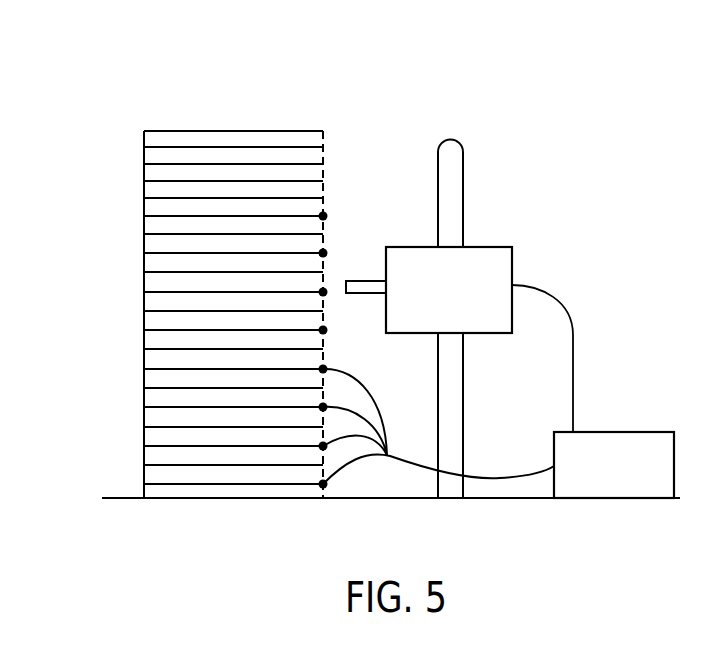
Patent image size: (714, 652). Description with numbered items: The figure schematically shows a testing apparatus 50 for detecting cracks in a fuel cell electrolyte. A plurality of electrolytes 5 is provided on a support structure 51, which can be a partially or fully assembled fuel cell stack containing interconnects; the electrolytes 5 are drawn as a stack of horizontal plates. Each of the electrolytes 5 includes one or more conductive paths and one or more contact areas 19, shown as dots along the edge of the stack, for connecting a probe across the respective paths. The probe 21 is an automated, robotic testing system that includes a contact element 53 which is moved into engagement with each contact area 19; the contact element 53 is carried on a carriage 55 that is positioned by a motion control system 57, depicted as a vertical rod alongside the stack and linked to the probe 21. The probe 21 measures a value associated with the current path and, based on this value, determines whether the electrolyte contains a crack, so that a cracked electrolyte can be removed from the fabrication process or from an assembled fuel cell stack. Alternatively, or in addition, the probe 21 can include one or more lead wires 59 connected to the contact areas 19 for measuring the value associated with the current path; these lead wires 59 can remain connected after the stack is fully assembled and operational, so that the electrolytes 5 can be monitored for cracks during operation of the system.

The electrolytes 5 is at (247, 223).
The contact areas 19 is at (323, 216).
The probe 21 is at (633, 432).
The testing apparatus 50 is at (605, 85).
The support structure 51 is at (82, 199).
The contact element 53 is at (372, 293).
The carriage 55 is at (479, 339).
The motion control system 57 is at (462, 210).
The lead wires 59 is at (373, 398).